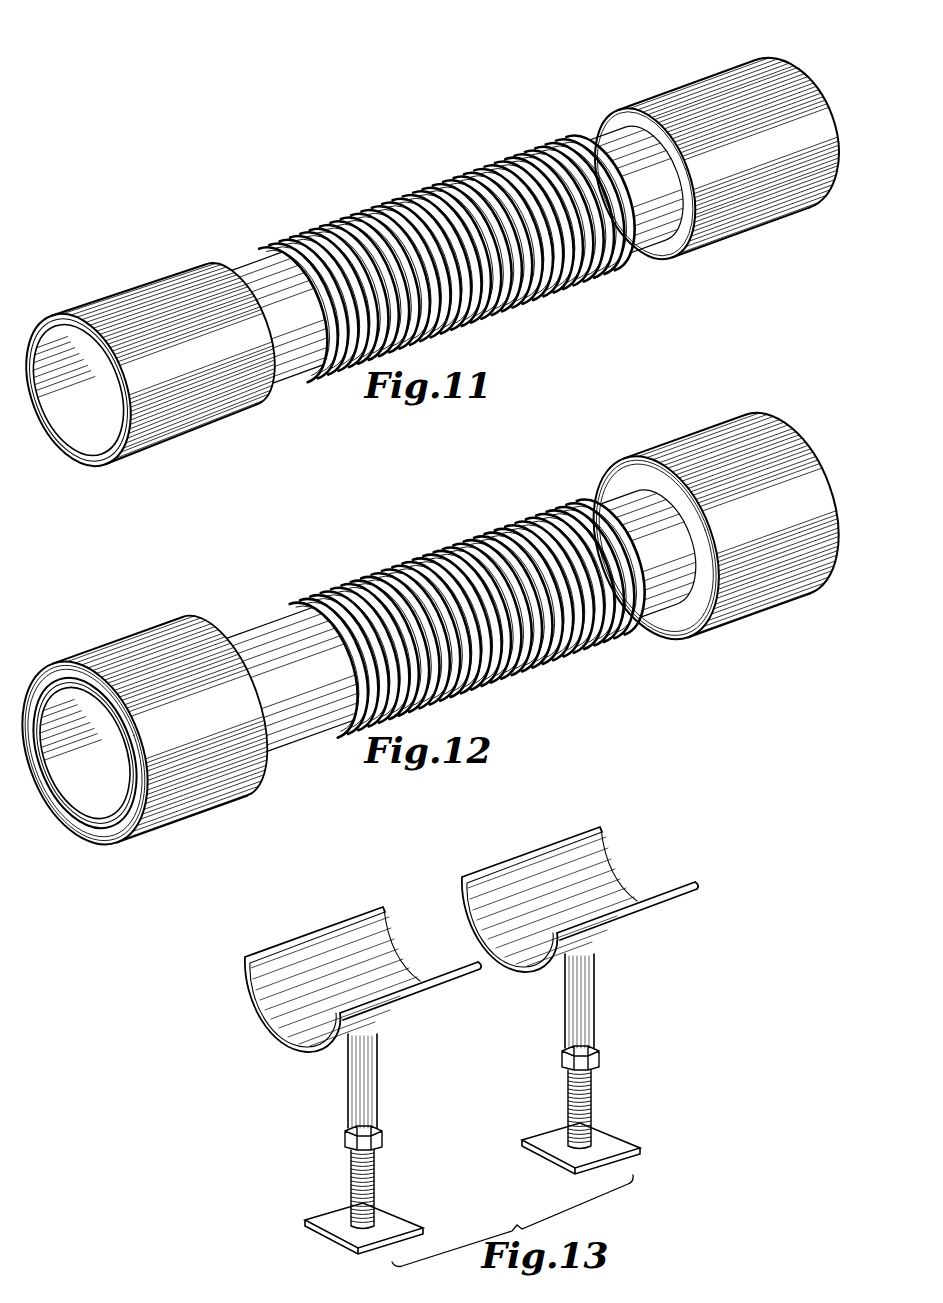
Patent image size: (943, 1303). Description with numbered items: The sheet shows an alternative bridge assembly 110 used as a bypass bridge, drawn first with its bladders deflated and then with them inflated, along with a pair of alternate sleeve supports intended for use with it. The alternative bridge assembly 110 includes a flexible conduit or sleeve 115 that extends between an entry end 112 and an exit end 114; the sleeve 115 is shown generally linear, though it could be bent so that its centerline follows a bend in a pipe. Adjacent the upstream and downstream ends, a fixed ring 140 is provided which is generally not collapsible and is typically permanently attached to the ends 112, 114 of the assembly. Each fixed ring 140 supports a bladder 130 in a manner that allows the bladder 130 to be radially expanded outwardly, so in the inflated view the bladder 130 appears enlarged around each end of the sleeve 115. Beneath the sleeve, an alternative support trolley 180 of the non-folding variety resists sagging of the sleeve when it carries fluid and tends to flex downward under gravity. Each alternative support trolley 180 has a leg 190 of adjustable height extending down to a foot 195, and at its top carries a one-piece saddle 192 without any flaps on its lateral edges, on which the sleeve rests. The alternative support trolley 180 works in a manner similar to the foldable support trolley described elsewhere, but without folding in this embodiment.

In FIG. 11, the alternative bridge assembly 110 is at (433, 263).
In FIG. 12, the alternative bridge assembly 110 is at (431, 631).
In FIG. 11, the entry end 112 is at (78, 390).
In FIG. 12, the entry end 112 is at (84, 753).
In FIG. 11, the exit end 114 is at (807, 125).
In FIG. 12, the exit end 114 is at (804, 494).
In FIG. 11, the flexible sleeve 115 is at (455, 253).
In FIG. 12, the flexible sleeve 115 is at (476, 613).
In FIG. 11, the bladder 130 is at (433, 260).
In FIG. 12, the bladder 130 is at (430, 629).
In FIG. 11, the fixed ring 140 is at (277, 195).
In FIG. 12, the fixed ring 140 is at (277, 560).
In FIG. 13, the alternative support trolley 180 is at (478, 1018).
In FIG. 13, the leg 190 is at (395, 1144).
In FIG. 13, the saddle 192 is at (340, 942).
In FIG. 13, the foot 195 is at (400, 1220).